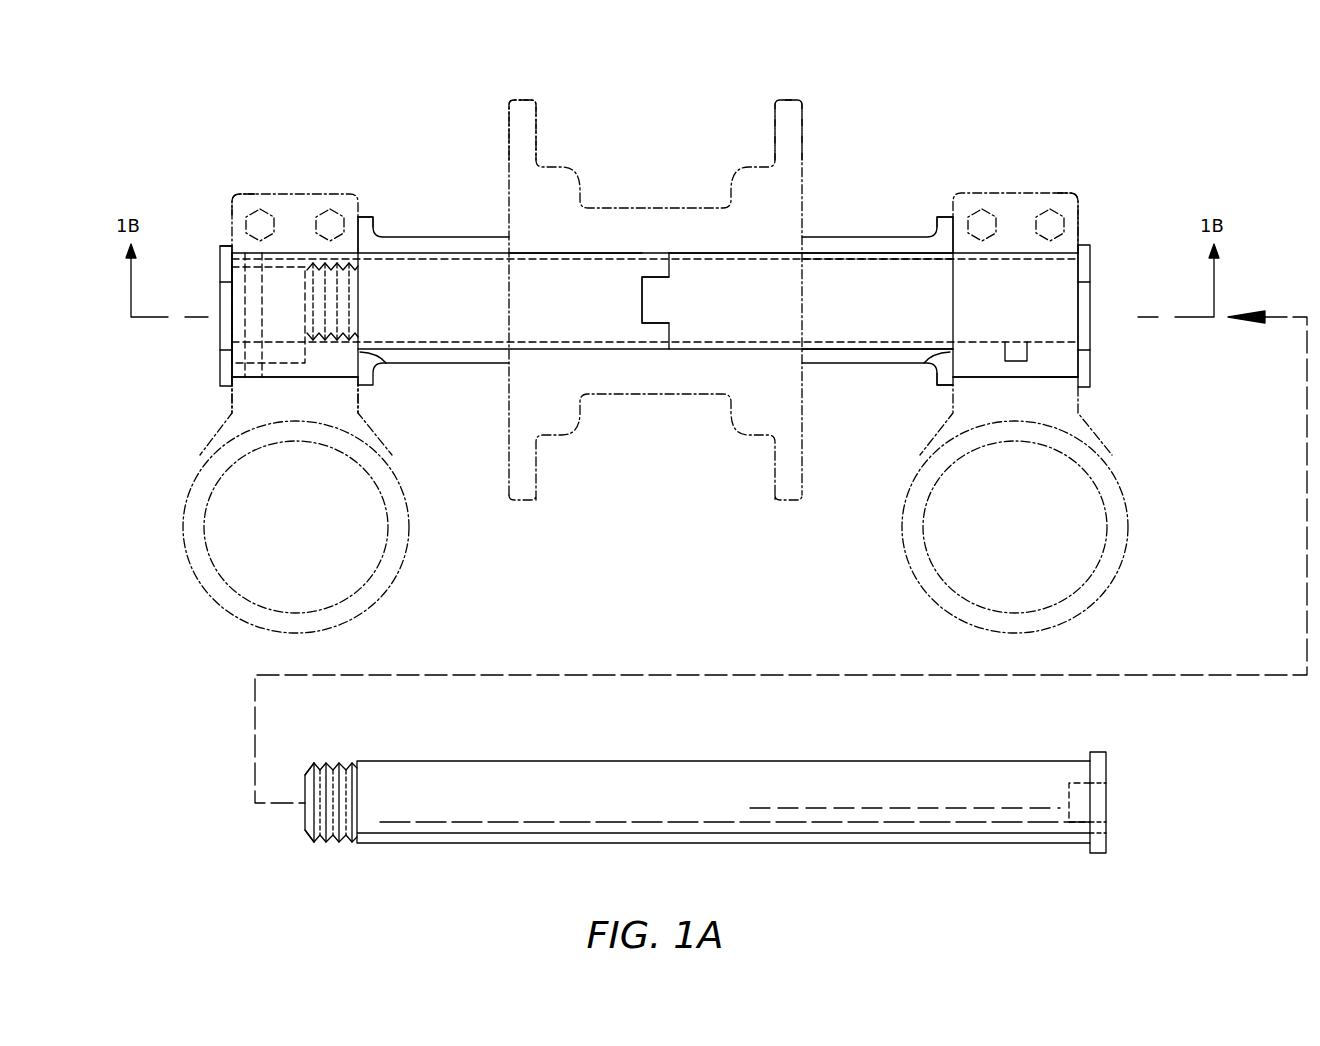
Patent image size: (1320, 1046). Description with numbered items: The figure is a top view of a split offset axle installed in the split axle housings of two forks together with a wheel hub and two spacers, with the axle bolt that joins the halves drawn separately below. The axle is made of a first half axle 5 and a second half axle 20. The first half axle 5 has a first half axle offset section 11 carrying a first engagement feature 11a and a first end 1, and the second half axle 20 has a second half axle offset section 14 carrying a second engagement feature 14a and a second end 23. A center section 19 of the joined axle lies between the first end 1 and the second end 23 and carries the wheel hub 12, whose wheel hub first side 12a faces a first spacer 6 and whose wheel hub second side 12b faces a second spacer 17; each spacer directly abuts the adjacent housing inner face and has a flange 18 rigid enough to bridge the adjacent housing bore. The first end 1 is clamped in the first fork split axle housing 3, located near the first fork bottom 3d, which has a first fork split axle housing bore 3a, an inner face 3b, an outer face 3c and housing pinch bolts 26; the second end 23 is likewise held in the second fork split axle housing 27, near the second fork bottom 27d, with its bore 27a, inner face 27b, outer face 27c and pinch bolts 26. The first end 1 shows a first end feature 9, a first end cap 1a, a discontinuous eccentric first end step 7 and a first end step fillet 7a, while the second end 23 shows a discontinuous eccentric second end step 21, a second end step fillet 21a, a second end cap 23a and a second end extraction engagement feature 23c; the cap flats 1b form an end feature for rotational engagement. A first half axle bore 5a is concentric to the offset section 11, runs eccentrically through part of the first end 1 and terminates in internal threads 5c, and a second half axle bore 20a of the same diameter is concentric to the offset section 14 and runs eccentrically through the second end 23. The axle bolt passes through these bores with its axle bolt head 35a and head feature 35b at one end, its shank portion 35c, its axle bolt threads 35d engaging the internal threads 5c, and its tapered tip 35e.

The first end 1 is at (338, 368).
The first end cap 1a is at (222, 245).
The cap flats 1b is at (1085, 300).
The first fork split axle housing 3 is at (300, 198).
The first fork split axle housing bore 3a is at (297, 250).
The first fork split axle housing inner face 3b is at (360, 206).
The first fork split axle housing outer face 3c is at (232, 210).
The first fork bottom 3d is at (182, 520).
The first half axle 5 is at (465, 322).
The first half axle bore 5a is at (433, 258).
The internal threads of the first half axle bore 5c is at (270, 423).
The first spacer 6 is at (465, 243).
The discontinuous eccentric first end step 7 is at (367, 350).
The first end step fillet 7a is at (372, 343).
The first end feature 9 is at (245, 277).
The first half axle offset section 11 is at (543, 295).
The first engagement feature 11a is at (642, 300).
The wheel hub 12 is at (588, 230).
The wheel hub first side 12a is at (512, 118).
The wheel hub second side 12b is at (802, 143).
The second half axle offset section 14 is at (728, 295).
The second engagement feature 14a is at (645, 290).
The second spacer 17 is at (860, 242).
The spacer flange 18 is at (938, 222).
The center section 19 is at (578, 330).
The second half axle 20 is at (853, 313).
The second half axle bore 20a is at (823, 260).
The discontinuous eccentric second end step 21 is at (930, 366).
The second end step fillet 21a is at (945, 368).
The second end 23 is at (1017, 360).
The second end cap 23a is at (1082, 360).
The second end extraction engagement feature 23c is at (985, 367).
The housing pinch bolts 26 is at (1050, 208).
The second fork split axle housing 27 is at (1070, 200).
The second fork split axle housing bore 27a is at (1058, 380).
The second fork split axle housing inner face 27b is at (955, 200).
The second fork split axle housing outer face 27c is at (1085, 215).
The second fork bottom 27d is at (1120, 542).
The axle bolt head 35a is at (1100, 762).
The axle bolt head feature 35b is at (1070, 805).
The pin shaft 35c is at (670, 782).
The axle bolt threads 35d is at (340, 768).
The axle bolt tapered tip 35e is at (313, 838).